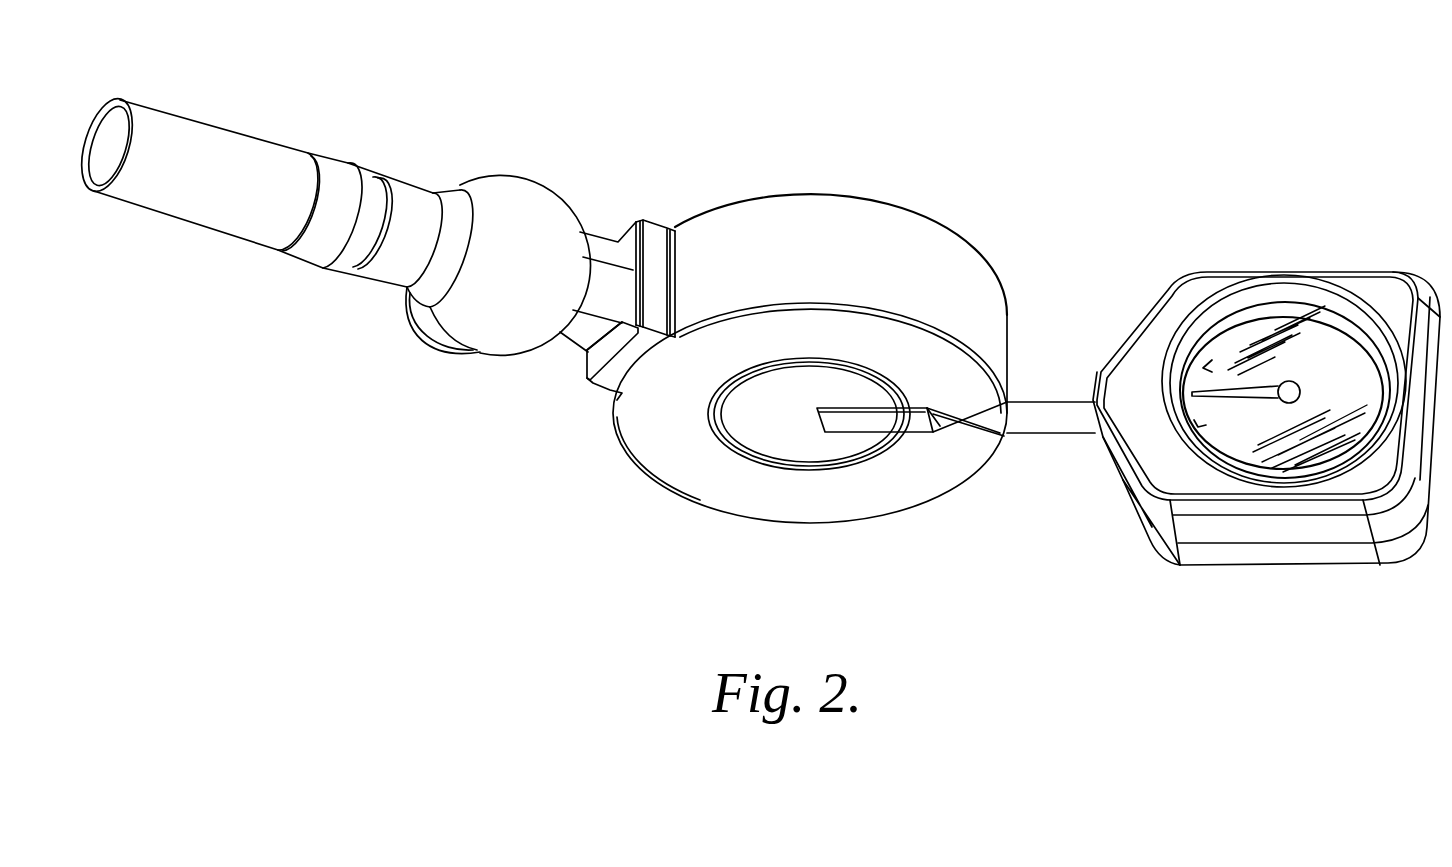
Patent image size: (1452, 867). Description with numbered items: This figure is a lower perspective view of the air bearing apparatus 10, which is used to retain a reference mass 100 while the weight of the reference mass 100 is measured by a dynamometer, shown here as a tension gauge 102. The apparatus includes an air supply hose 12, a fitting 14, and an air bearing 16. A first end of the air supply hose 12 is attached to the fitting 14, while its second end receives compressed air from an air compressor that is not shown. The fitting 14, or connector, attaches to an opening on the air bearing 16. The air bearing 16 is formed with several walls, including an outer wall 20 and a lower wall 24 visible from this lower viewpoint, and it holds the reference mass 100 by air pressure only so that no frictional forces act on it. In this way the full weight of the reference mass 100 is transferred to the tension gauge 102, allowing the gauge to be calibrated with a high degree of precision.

The air bearing apparatus 10 is at (753, 97).
The air supply hose 12 is at (195, 242).
The fitting 14 is at (425, 365).
The air bearing 16 is at (708, 200).
The outer wall 20 is at (937, 247).
The lower wall 24 is at (700, 482).
The reference mass 100 is at (807, 457).
The tension gauge 102 is at (1278, 250).